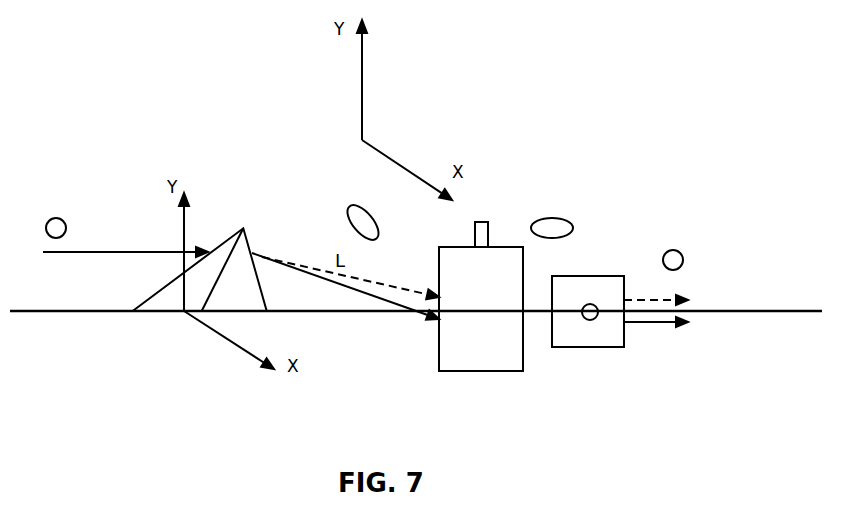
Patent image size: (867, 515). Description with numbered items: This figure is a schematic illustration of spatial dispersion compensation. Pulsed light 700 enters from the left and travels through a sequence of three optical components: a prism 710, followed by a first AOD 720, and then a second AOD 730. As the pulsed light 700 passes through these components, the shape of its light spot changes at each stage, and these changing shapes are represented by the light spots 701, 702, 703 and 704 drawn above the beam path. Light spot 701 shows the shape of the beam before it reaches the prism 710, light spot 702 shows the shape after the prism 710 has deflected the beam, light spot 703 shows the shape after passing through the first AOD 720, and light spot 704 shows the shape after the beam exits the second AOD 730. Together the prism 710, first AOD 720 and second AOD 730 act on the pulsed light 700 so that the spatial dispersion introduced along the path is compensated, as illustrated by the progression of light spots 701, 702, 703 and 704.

The pulsed light 700 is at (129, 246).
The light spot 701 is at (52, 215).
The light spot 702 is at (346, 205).
The light spot 703 is at (554, 214).
The light spot 704 is at (674, 244).
The prism 710 is at (229, 232).
The first AOD 720 is at (437, 262).
The second AOD 730 is at (607, 274).